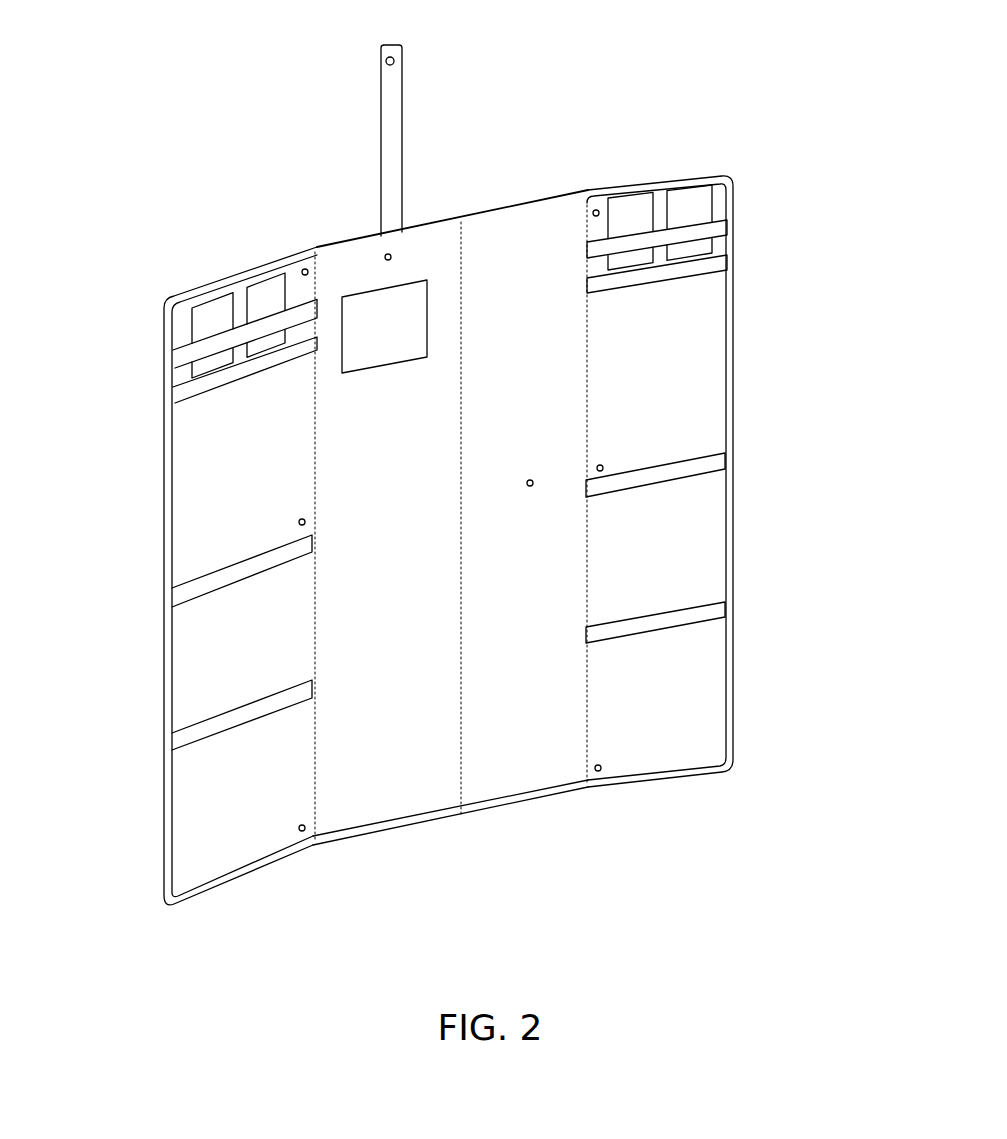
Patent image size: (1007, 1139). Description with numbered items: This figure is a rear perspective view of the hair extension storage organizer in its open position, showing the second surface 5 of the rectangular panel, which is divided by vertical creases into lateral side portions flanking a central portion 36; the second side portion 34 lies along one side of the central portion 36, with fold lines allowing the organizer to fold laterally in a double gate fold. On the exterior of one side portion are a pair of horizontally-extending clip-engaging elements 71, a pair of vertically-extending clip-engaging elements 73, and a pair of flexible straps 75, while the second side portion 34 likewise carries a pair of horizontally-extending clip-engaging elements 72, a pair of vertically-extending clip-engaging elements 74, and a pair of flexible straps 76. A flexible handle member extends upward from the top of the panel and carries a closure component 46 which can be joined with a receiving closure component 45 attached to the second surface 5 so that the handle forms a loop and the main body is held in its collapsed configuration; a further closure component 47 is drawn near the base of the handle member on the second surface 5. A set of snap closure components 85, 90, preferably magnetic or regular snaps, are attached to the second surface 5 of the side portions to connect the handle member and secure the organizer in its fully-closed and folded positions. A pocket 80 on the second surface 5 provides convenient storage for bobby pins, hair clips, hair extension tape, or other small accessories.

The second surface 5 is at (432, 708).
The second side portion 34 is at (248, 640).
The central portion 36 is at (687, 575).
The receiving closure component 45 is at (535, 480).
The closure component 46 is at (400, 62).
The rivet 47 is at (393, 255).
The horizontally-extending clip-engaging elements 71 is at (183, 392).
The horizontally-extending clip-engaging elements 72 is at (718, 229).
The vertically-extending clip-engaging elements 73 is at (222, 312).
The vertically-extending clip-engaging elements 74 is at (677, 196).
The flexible straps 75 is at (175, 598).
The flexible straps 76 is at (718, 463).
The pocket 80 is at (387, 307).
The closure component 85 is at (603, 775).
The closure component 90 is at (300, 840).